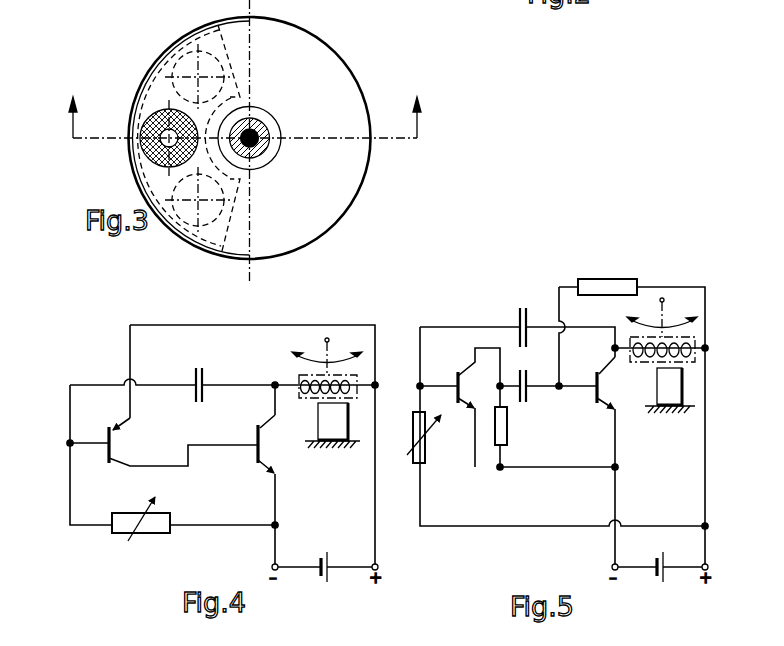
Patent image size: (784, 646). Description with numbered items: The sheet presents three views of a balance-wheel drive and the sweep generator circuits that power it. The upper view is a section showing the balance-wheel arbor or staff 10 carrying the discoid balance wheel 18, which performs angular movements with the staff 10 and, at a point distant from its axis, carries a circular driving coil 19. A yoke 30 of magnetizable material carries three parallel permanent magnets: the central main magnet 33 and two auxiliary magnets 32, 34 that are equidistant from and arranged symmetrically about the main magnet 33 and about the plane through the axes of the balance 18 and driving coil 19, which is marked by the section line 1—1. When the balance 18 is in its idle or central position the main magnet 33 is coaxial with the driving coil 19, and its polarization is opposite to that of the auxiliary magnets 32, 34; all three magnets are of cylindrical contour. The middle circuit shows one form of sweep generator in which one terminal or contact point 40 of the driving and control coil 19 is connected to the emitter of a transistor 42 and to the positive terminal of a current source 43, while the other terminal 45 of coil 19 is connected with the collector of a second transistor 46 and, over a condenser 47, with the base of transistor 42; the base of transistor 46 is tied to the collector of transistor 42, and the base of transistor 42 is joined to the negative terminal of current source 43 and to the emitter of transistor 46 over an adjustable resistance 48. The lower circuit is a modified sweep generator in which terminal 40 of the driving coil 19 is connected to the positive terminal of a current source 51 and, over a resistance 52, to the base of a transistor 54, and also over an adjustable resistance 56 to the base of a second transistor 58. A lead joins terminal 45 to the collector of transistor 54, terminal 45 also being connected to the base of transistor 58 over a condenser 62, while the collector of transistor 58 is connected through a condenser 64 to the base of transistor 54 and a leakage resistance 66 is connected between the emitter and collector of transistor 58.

In FIG. 3, the section line 1 is at (244, 129).
In FIG. 3, the balance-wheel arbor or staff 10 is at (264, 126).
In FIG. 3, the balance wheel 18 is at (347, 88).
In FIG. 3, the driving coil 19 is at (145, 120).
In FIG. 4, the driving coil 19 is at (305, 378).
In FIG. 5, the driving coil 19 is at (635, 362).
In FIG. 3, the yoke 30 is at (161, 62).
In FIG. 3, the auxiliary permanent magnet 32 is at (190, 58).
In FIG. 3, the main permanent magnet 33 is at (147, 95).
In FIG. 4, the main permanent magnet 33 is at (318, 428).
In FIG. 5, the main permanent magnet 33 is at (657, 398).
In FIG. 3, the auxiliary permanent magnet 34 is at (178, 220).
In FIG. 4, the coil terminal 40 is at (377, 384).
In FIG. 5, the coil terminal 40 is at (705, 351).
In FIG. 4, the transistor 42 is at (109, 436).
In FIG. 4, the current source 43 is at (322, 560).
In FIG. 4, the coil terminal 45 is at (274, 384).
In FIG. 5, the coil terminal 45 is at (614, 350).
In FIG. 4, the second transistor 46 is at (258, 428).
In FIG. 4, the condenser 47 is at (196, 378).
In FIG. 4, the adjustable resistance 48 is at (147, 533).
In FIG. 5, the current source 51 is at (662, 556).
In FIG. 5, the resistance 52 is at (612, 286).
In FIG. 5, the transistor 54 is at (604, 369).
In FIG. 5, the adjustable resistance 56 is at (425, 450).
In FIG. 5, the second transistor 58 is at (462, 373).
In FIG. 5, the condenser 62 is at (519, 322).
In FIG. 5, the condenser 64 is at (528, 395).
In FIG. 5, the leakage resistance 66 is at (507, 428).